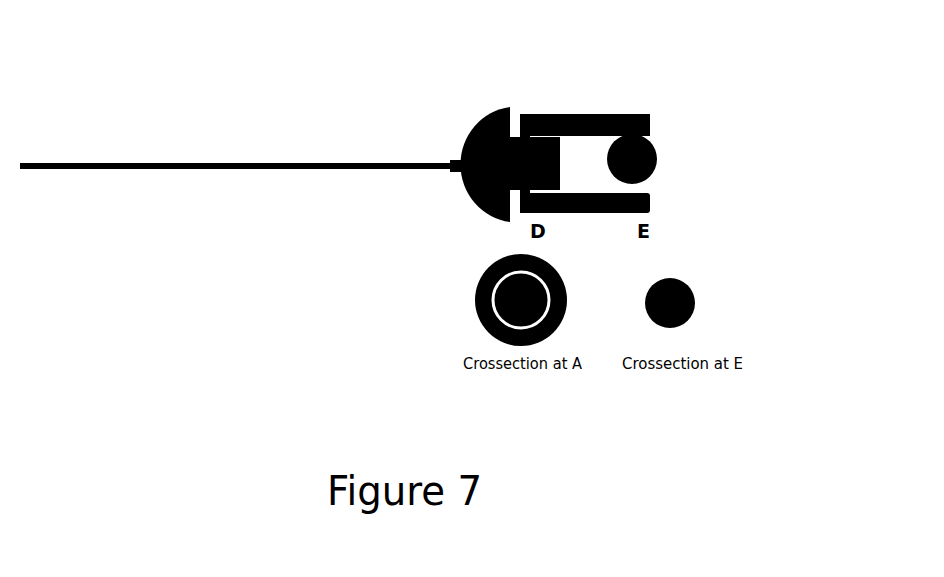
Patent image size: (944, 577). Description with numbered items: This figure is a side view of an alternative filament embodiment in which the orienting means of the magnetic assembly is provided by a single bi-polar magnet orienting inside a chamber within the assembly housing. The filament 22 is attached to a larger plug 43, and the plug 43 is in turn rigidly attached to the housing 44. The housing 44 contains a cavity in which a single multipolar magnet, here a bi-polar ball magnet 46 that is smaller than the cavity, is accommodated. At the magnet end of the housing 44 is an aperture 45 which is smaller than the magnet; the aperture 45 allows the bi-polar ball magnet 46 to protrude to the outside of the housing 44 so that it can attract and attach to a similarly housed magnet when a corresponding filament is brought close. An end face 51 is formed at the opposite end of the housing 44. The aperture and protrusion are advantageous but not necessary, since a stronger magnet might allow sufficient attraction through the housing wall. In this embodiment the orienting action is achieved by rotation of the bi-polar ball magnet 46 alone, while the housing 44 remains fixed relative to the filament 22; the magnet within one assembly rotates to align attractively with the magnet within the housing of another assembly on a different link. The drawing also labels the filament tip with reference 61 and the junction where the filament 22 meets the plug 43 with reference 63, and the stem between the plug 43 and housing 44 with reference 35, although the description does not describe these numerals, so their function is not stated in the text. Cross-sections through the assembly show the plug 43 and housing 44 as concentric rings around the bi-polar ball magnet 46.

The needle / wire 61 is at (22, 163).
The filament 22 is at (273, 170).
The needle hub junction 63 is at (456, 168).
The plug 43 is at (462, 126).
The connector stem 35 is at (575, 150).
The housing 44 is at (573, 114).
The end face 51 is at (652, 131).
The bi-polar ball magnet 46 is at (752, 190).
The aperture 45 is at (657, 165).